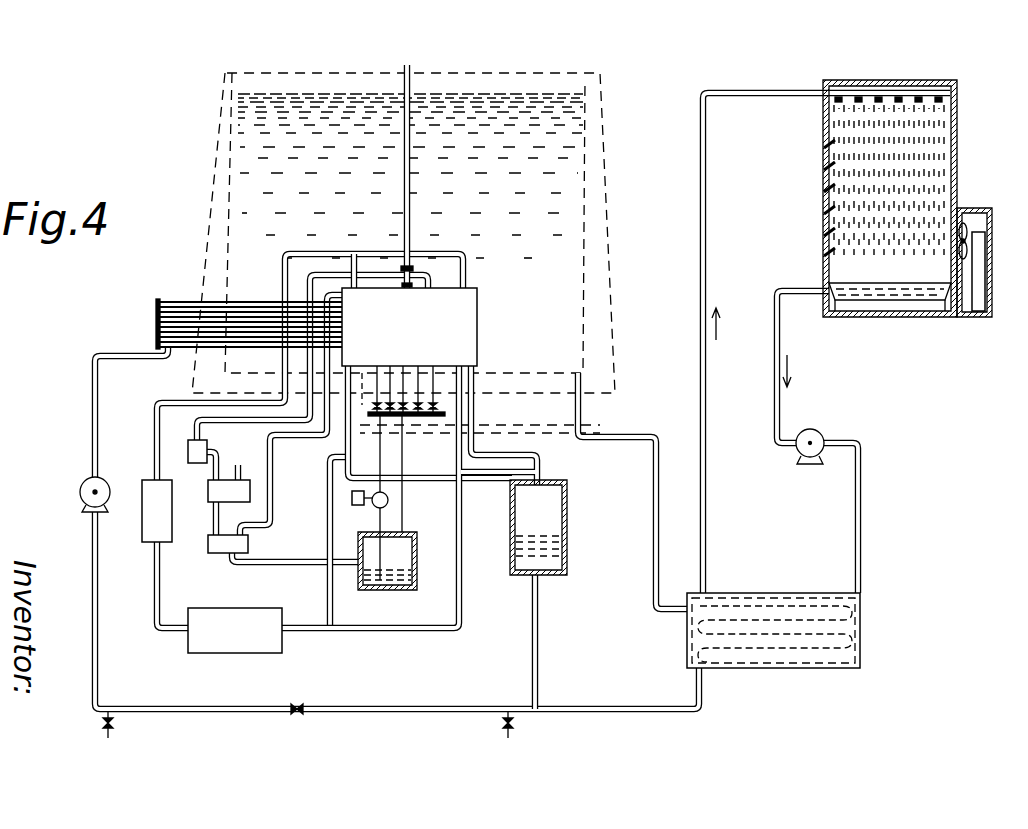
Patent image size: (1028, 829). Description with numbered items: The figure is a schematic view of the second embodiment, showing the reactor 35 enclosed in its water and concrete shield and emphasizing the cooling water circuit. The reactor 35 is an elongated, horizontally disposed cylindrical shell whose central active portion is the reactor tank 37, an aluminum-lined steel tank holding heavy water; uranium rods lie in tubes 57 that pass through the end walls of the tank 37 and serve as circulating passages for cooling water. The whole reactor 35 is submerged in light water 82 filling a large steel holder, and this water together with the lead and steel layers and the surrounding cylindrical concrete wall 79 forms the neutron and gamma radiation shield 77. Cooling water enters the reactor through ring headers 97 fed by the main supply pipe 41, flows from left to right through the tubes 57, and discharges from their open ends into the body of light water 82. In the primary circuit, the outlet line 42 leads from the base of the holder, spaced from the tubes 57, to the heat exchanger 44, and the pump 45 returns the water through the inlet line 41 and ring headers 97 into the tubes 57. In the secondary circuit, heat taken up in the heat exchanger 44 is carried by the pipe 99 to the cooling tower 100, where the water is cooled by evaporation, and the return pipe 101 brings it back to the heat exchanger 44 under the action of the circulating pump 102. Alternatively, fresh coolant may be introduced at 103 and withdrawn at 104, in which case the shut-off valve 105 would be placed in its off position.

The reactor 35 is at (488, 350).
The reactor tank 37 is at (473, 313).
The main supply pipe 41 is at (120, 358).
The outlet line 42 is at (603, 440).
The heat exchanger 44 is at (871, 643).
The pump 45 is at (100, 486).
The tubes 57 is at (257, 284).
The radiation shield 77 is at (650, 306).
The cylindrical concrete wall 79 is at (210, 258).
The light water 82 is at (565, 157).
The ring headers 97 is at (180, 292).
The pipe 99 is at (708, 500).
The cooling tower 100 is at (957, 148).
The return pipe 101 is at (781, 345).
The circulating pump 102 is at (816, 438).
The coolant introduction point 103 is at (112, 726).
The coolant withdrawal point 104 is at (512, 726).
The shut-off valve 105 is at (297, 714).